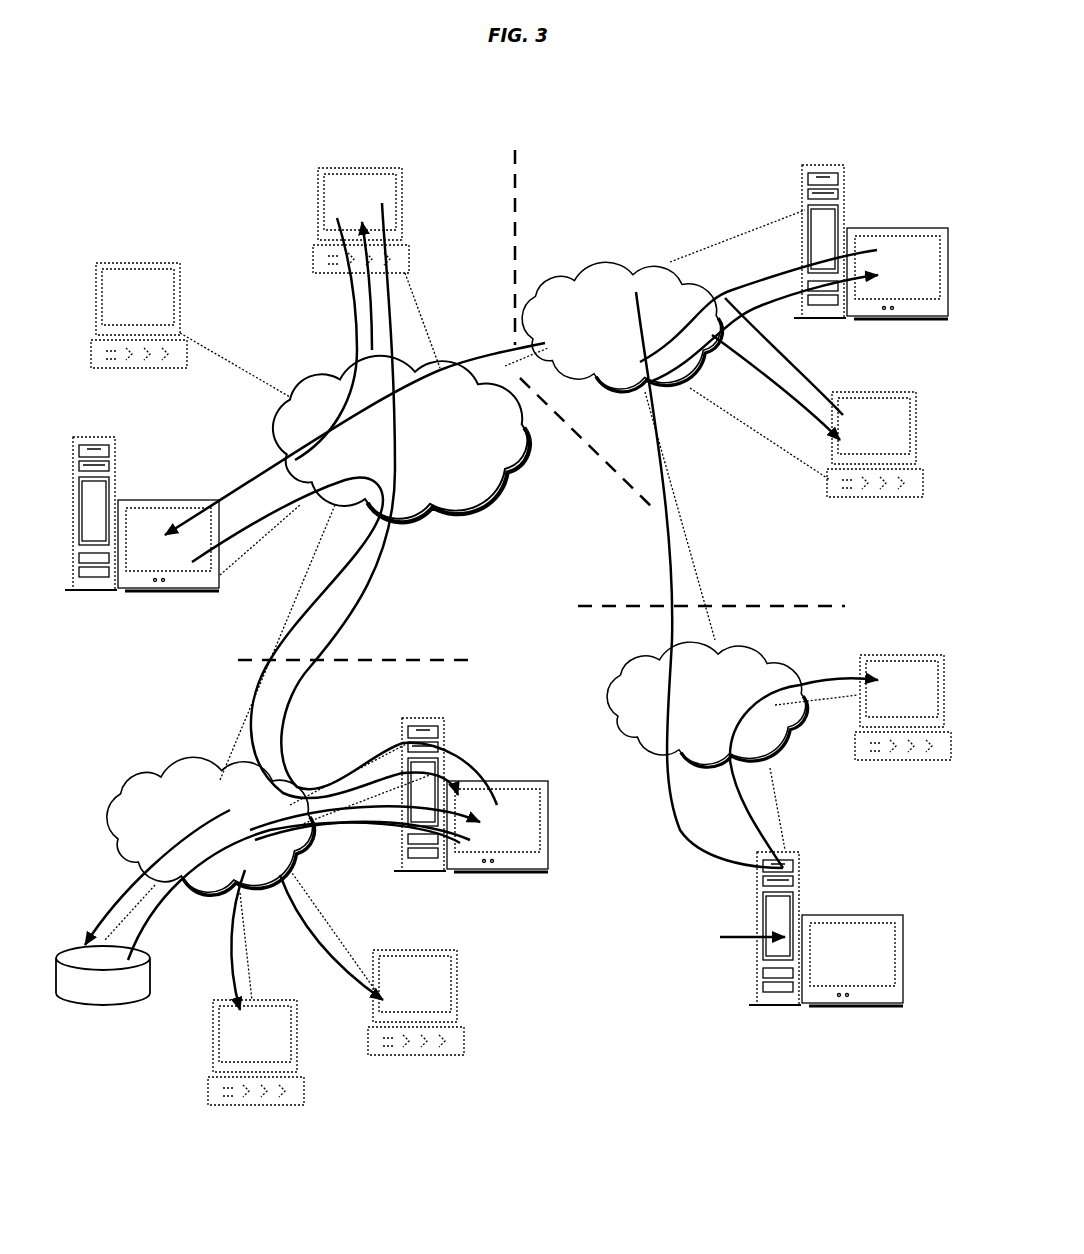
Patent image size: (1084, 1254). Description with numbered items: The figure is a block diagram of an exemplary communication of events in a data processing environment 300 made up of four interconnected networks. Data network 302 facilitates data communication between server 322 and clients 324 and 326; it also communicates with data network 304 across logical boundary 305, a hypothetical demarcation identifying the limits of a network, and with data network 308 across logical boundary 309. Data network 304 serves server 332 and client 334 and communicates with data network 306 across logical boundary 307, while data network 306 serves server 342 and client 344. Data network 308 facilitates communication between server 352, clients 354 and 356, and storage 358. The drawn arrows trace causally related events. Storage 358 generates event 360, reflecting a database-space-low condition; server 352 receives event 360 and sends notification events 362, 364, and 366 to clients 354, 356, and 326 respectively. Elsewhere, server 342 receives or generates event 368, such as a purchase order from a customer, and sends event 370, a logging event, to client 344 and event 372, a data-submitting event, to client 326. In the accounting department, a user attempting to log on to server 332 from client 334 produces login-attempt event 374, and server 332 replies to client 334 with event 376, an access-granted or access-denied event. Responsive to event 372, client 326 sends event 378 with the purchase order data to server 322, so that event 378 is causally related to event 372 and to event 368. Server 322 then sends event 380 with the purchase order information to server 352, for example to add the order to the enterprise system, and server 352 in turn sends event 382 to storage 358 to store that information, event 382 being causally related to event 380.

The data processing environment 300 is at (198, 184).
The data network 302 is at (401, 439).
The data network 304 is at (622, 327).
The logical boundary 305 is at (578, 316).
The data network 306 is at (707, 704).
The logical boundary 307 is at (733, 606).
The data network 308 is at (211, 826).
The logical boundary 309 is at (377, 656).
The server 322 is at (142, 537).
The client 324 is at (139, 335).
The client 326 is at (329, 220).
The server 332 is at (871, 257).
The client 334 is at (875, 464).
The server 342 is at (826, 953).
The client 344 is at (903, 728).
The server 352 is at (471, 808).
The client 354 is at (416, 1023).
The client 356 is at (256, 1072).
The storage 358 is at (103, 976).
The event 360 is at (294, 891).
The notification event 362 is at (221, 940).
The notification event 364 is at (331, 937).
The notification event 366 is at (389, 504).
The event 368 is at (734, 937).
The event 370 is at (804, 763).
The event 372 is at (709, 580).
The login-attempt event 374 is at (764, 328).
The event 376 is at (758, 303).
The event 378 is at (355, 439).
The event 380 is at (325, 637).
The event 382 is at (154, 877).